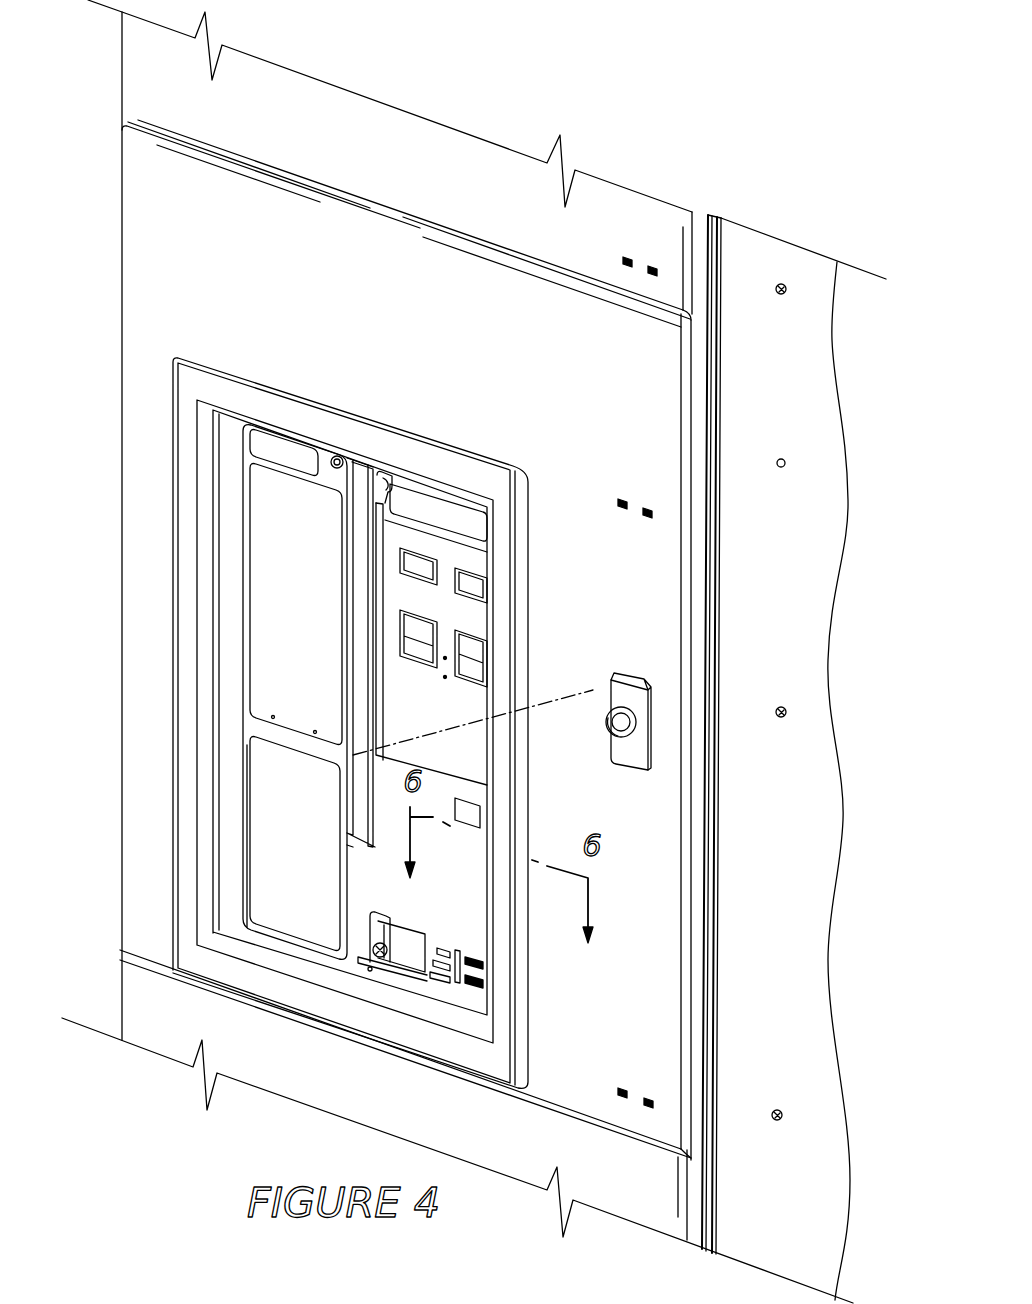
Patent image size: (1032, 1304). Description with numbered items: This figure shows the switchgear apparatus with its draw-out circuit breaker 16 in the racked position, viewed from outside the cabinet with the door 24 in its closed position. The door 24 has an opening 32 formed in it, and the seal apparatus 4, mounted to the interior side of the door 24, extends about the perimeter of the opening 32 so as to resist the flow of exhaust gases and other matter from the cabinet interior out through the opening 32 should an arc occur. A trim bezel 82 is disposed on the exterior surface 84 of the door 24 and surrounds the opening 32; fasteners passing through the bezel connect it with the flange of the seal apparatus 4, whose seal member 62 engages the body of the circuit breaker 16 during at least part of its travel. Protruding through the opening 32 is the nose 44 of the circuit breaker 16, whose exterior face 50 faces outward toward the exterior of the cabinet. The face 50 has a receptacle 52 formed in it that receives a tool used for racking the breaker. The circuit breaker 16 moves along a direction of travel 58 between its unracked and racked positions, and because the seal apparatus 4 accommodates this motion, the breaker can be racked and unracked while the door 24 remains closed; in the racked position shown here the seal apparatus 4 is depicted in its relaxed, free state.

The seal apparatus 4 is at (241, 692).
The circuit breaker 16 is at (276, 561).
The door 24 is at (140, 221).
The opening 32 is at (224, 488).
The nose 44 is at (278, 790).
The exterior face 50 is at (473, 897).
The receptacle 52 is at (407, 940).
The direction of travel 58 is at (548, 700).
The seal member 62 is at (234, 840).
The trim bezel 82 is at (307, 400).
The exterior surface 84 is at (144, 282).